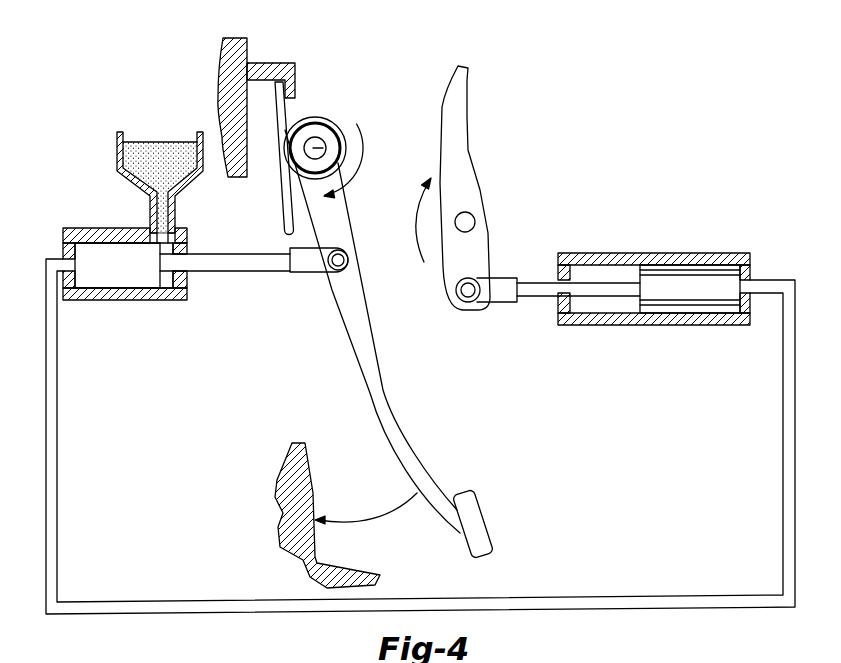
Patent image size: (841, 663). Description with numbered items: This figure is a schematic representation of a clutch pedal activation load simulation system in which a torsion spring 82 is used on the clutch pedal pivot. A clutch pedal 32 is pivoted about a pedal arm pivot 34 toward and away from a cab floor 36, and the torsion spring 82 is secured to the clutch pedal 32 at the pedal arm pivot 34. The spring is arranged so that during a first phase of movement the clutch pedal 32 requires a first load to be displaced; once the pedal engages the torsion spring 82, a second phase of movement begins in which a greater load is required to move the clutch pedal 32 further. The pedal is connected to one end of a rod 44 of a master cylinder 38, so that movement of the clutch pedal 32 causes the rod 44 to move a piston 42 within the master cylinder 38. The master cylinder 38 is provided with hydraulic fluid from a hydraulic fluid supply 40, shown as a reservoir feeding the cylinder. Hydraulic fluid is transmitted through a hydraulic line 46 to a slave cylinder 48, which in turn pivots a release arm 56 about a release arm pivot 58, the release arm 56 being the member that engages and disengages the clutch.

The clutch pedal 32 is at (495, 522).
The pedal arm pivot 34 is at (314, 146).
The cab floor 36 is at (307, 490).
The master cylinder 38 is at (112, 300).
The hydraulic fluid supply 40 is at (145, 142).
The piston 42 is at (180, 248).
The rod 44 is at (233, 272).
The hydraulic line 46 is at (673, 596).
The slave cylinder 48 is at (680, 326).
The release arm 56 is at (455, 138).
The release arm pivot 58 is at (468, 222).
The torsion spring 82 is at (305, 120).